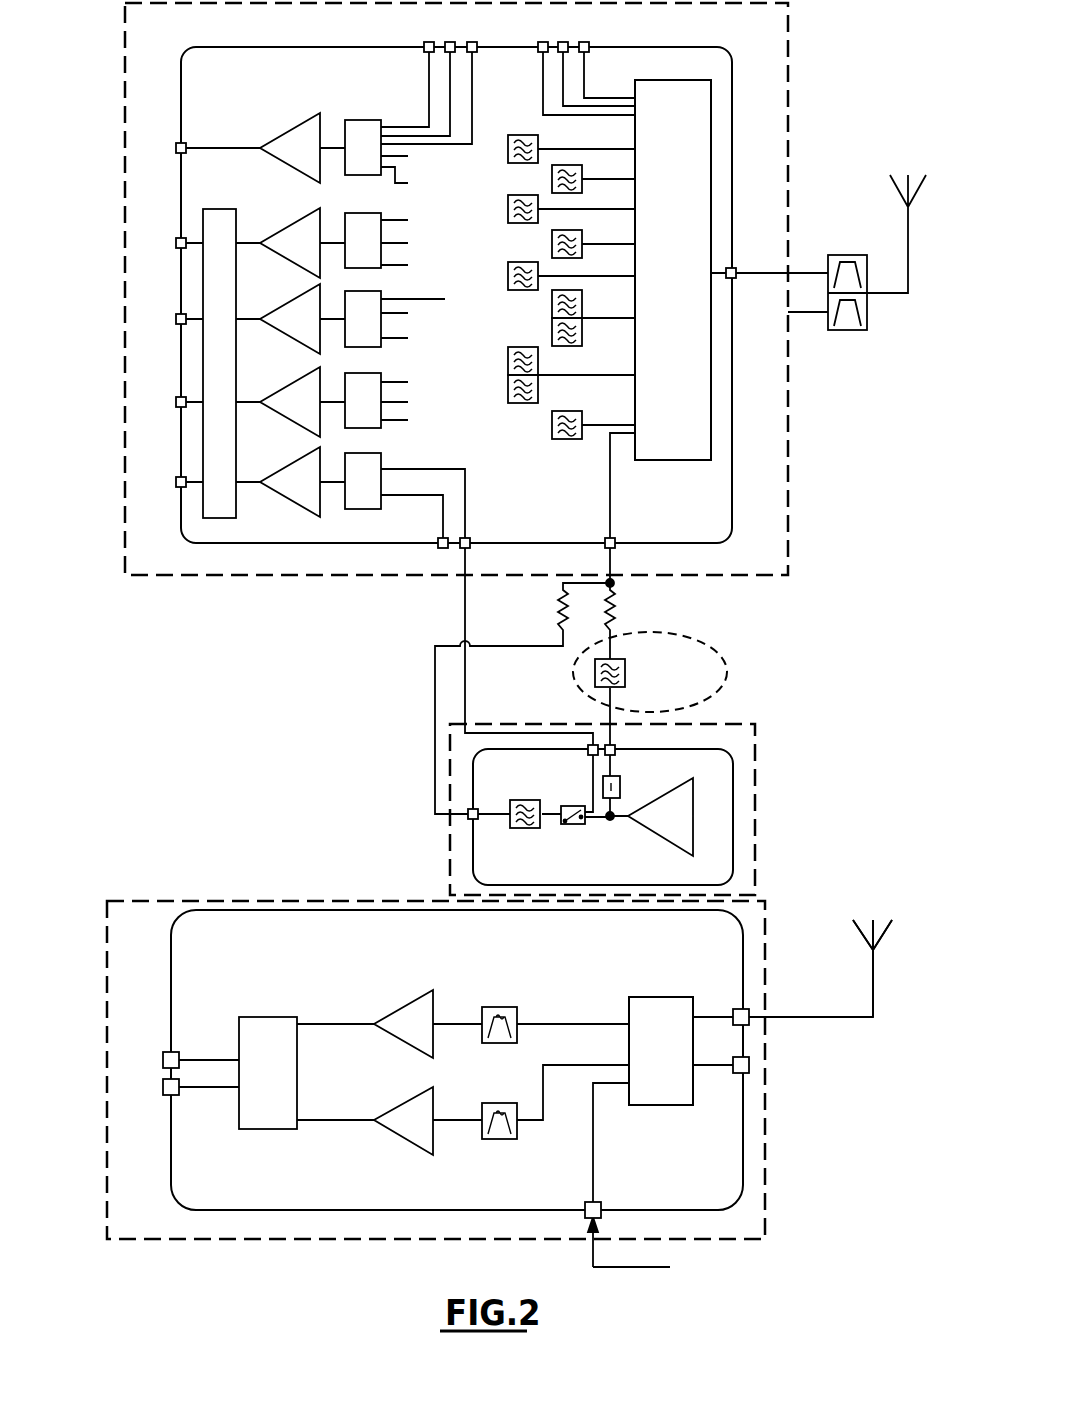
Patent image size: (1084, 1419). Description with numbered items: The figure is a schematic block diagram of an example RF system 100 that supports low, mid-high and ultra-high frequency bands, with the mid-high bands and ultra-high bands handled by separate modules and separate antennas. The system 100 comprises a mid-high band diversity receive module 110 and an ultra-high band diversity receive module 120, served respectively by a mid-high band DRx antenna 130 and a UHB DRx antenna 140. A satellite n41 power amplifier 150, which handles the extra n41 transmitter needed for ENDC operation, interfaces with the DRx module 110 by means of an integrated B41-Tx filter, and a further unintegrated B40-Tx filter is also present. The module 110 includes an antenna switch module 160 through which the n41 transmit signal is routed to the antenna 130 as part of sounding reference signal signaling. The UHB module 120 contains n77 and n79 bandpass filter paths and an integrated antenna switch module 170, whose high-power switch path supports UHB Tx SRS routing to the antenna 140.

The RF system 100 is at (838, 73).
The MHB diversity receive module 110 is at (118, 153).
The UHB diversity receive module 120 is at (249, 891).
The MHB DRx antenna 130 is at (927, 178).
The UHB DRx antenna 140 is at (882, 937).
The satellite n41 power amplifier 150 is at (765, 806).
The antenna switch module 160 is at (693, 213).
The antenna switch module 170 is at (668, 997).